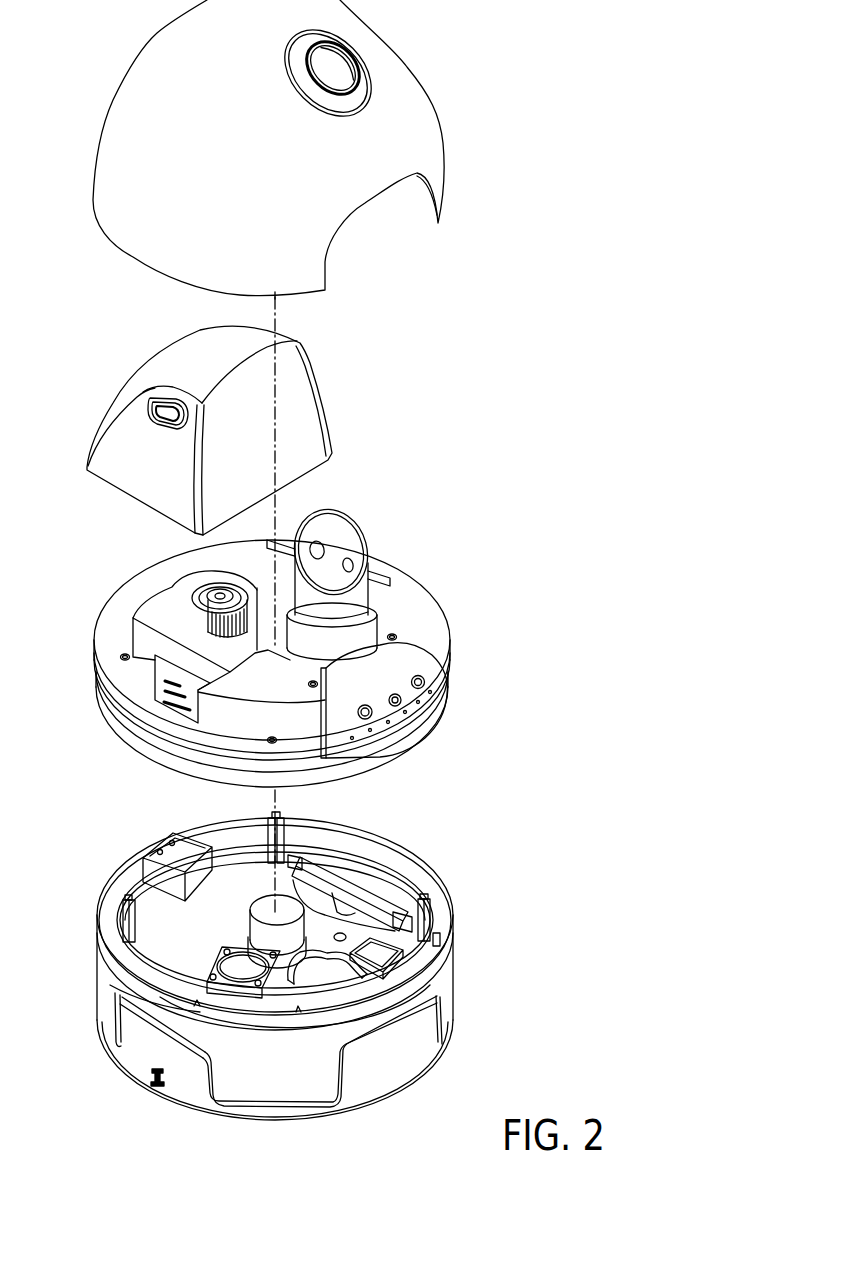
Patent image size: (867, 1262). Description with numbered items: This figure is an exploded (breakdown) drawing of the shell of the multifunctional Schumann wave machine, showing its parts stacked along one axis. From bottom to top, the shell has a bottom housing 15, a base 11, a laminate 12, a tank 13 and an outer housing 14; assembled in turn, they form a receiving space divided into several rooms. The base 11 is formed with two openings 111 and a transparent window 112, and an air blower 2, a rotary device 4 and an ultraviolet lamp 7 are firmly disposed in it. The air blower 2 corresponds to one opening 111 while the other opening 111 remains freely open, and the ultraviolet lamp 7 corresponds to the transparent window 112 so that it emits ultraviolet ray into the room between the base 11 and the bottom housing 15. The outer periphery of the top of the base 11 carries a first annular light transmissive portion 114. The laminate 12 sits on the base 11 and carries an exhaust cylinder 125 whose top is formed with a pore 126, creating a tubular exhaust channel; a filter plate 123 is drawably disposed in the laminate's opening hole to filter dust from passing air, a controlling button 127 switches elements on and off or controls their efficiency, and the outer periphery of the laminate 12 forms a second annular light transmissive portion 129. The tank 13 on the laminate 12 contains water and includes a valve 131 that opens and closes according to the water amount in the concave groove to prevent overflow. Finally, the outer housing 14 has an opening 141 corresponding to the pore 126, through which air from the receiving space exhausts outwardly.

The outer housing 14 is at (343, 60).
The opening 141 is at (328, 73).
The tank 13 is at (302, 404).
The laminate 12 is at (428, 630).
The valve 131 is at (195, 582).
The exhaust cylinder 125 is at (358, 610).
The filter plate 123 is at (375, 572).
The pore 126 is at (317, 547).
The controlling button 127 is at (422, 682).
The second annular light transmissive portion 129 is at (413, 737).
The base 11 is at (447, 997).
The openings 111 is at (415, 946).
The transparent window 112 is at (348, 908).
The first annular light transmissive portion 114 is at (153, 998).
The bottom housing 15 is at (415, 1042).
The rotary device 4 is at (260, 905).
The air blower 2 is at (218, 967).
The ultraviolet lamp 7 is at (373, 908).